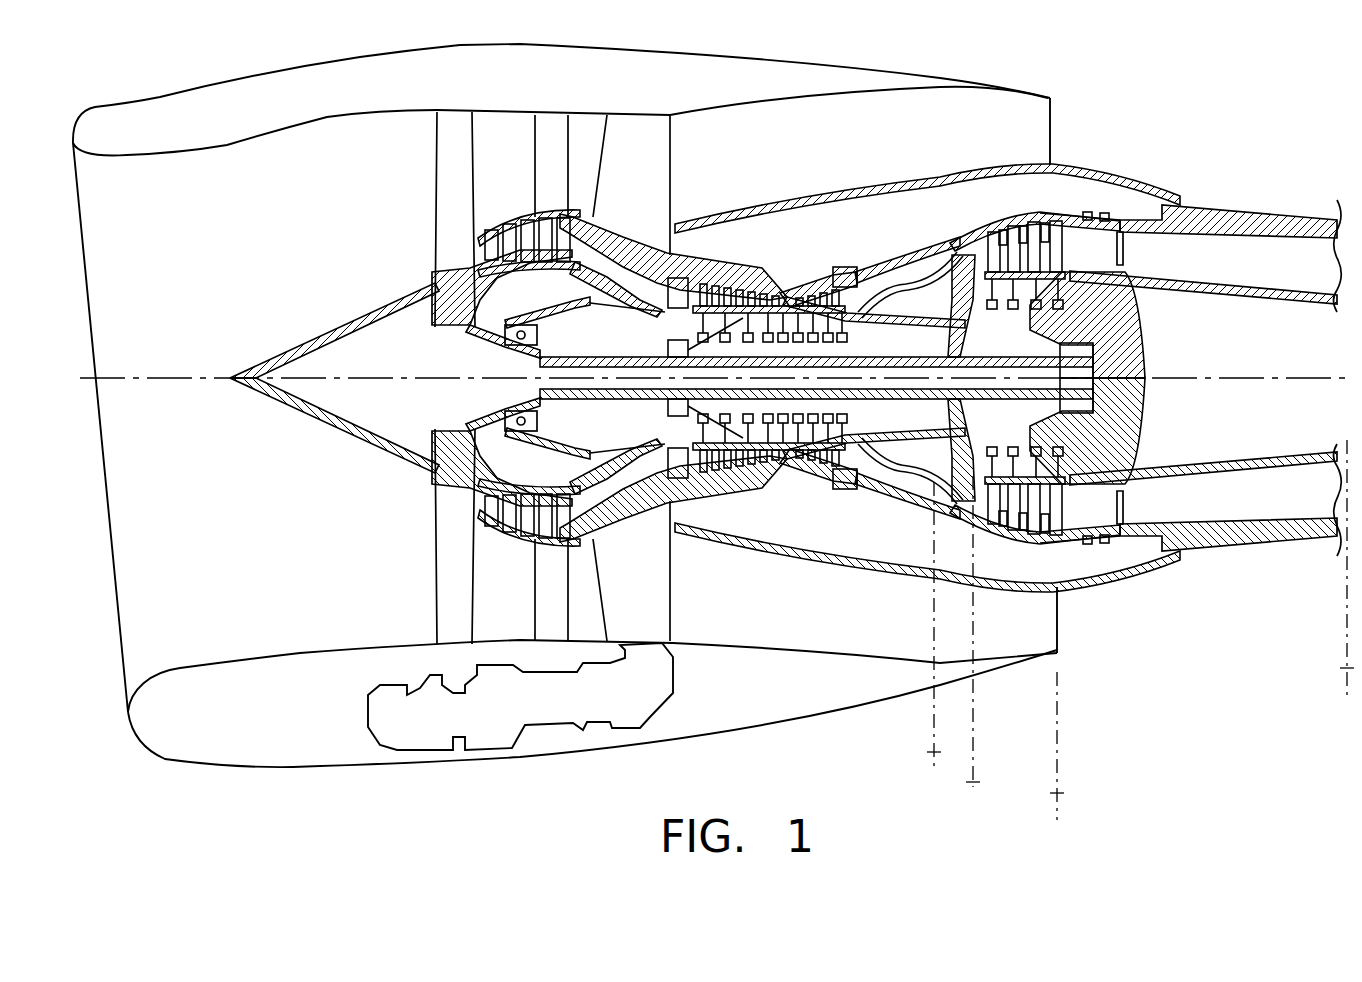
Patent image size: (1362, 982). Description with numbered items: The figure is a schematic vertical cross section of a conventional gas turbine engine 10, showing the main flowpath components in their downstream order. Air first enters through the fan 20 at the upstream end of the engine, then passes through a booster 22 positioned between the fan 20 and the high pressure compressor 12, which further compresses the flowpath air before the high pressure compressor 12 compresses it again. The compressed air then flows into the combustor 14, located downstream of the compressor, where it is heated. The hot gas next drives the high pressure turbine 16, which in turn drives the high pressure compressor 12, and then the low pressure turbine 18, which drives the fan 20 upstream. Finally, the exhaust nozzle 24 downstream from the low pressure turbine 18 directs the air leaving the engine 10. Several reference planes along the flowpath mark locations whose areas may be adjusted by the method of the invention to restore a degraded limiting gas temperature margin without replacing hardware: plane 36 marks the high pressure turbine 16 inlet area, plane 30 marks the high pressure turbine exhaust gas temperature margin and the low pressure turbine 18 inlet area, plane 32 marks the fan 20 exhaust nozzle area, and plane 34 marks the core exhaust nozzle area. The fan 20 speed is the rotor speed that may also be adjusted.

The gas turbine engine 10 is at (1121, 76).
The high pressure compressor 12 is at (775, 276).
The combustor 14 is at (893, 253).
The high pressure turbine 16 is at (965, 235).
The low pressure turbine 18 is at (1049, 208).
The fan 20 is at (426, 133).
The booster 22 is at (527, 200).
The exhaust nozzle 24 is at (1237, 197).
The plane 30 is at (973, 782).
The plane 32 is at (1057, 793).
The plane 34 is at (1345, 668).
The plane 36 is at (935, 752).